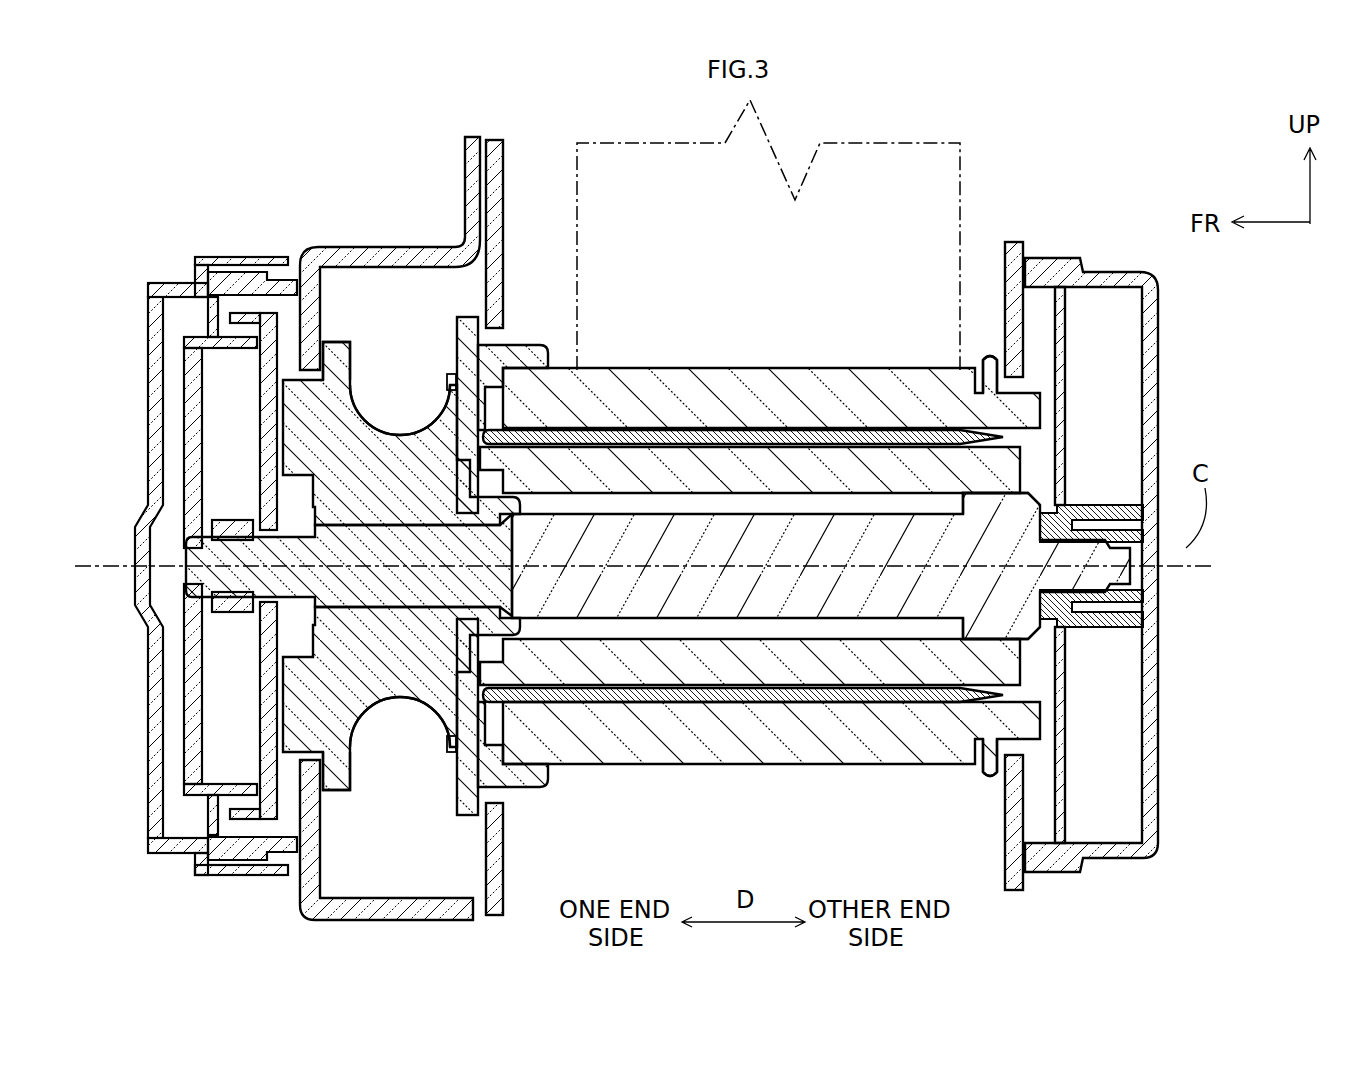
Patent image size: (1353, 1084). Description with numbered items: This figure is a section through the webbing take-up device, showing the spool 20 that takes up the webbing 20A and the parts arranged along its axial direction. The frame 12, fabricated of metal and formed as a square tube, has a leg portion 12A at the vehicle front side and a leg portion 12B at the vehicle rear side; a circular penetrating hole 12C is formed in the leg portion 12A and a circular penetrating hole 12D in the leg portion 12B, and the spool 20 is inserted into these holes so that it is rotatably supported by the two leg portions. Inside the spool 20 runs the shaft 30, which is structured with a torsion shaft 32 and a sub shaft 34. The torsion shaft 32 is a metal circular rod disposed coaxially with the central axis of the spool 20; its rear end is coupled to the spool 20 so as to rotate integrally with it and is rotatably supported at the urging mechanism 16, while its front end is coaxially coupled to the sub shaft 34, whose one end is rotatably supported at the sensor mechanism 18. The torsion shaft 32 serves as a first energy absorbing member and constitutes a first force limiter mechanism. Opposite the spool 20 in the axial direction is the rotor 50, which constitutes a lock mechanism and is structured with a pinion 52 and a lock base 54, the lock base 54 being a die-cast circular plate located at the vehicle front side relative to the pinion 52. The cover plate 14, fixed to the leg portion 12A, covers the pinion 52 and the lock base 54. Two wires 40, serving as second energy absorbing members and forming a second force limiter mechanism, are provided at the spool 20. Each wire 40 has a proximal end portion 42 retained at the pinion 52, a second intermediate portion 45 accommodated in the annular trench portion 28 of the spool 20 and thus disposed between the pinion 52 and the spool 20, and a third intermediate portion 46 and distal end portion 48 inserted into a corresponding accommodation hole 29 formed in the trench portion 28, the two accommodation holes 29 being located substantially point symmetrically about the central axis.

The frame 12 is at (777, 505).
The leg portion 12A is at (502, 162).
The leg portion 12B is at (1015, 242).
The penetrating hole 12C is at (500, 795).
The penetrating hole 12D is at (1002, 758).
The cover plate 14 is at (360, 246).
The urging mechanism 16 is at (1125, 252).
The sensor mechanism 18 is at (244, 252).
The spool 20 is at (748, 772).
The webbing 20A is at (880, 182).
The trench portion 28 is at (495, 380).
The accommodation hole 29 is at (820, 445).
The shaft 30 is at (401, 566).
The torsion shaft 32 is at (868, 600).
The sub shaft 34 is at (405, 600).
The wire 40 is at (688, 436).
The proximal end portion 42 is at (448, 382).
The second intermediate portion 45 is at (475, 400).
The third intermediate portion 46 is at (628, 436).
The distal end portion 48 is at (968, 415).
The rotor 50 is at (375, 467).
The pinion 52 is at (462, 312).
The lock base 54 is at (346, 330).